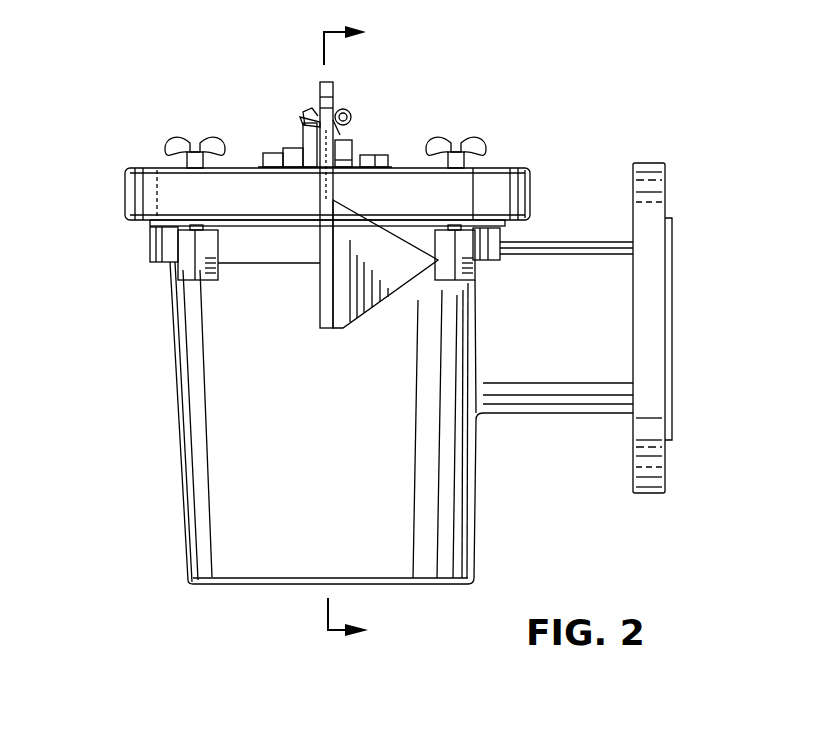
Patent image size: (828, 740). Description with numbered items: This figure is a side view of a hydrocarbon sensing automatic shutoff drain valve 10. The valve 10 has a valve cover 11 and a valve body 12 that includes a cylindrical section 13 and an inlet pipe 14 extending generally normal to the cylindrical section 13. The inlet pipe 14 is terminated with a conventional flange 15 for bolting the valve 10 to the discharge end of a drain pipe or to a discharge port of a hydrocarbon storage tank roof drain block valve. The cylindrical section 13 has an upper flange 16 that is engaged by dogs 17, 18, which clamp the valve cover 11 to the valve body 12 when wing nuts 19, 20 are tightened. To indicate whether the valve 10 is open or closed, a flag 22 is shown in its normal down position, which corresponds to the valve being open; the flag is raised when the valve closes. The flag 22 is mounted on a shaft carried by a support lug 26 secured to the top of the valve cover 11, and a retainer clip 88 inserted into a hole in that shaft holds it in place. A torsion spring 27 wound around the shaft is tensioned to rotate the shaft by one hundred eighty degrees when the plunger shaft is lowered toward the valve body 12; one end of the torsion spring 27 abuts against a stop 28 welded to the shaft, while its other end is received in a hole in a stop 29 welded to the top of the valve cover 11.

The hydrocarbon sensing automatic shutoff drain valve 10 is at (508, 76).
The valve cover 11 is at (508, 177).
The valve body 12 is at (168, 385).
The cylindrical section 13 is at (196, 510).
The inlet pipe 14 is at (542, 403).
The flange 15 is at (650, 168).
The upper flange 16 is at (130, 197).
The dog 17 is at (196, 280).
The dog 18 is at (472, 274).
The wing nut 19 is at (185, 147).
The wing nut 20 is at (478, 147).
The flag 22 is at (360, 303).
The support lug 26 is at (350, 130).
The torsion spring 27 is at (313, 132).
The stop 28 is at (321, 97).
The stop 29 is at (353, 147).
The retainer clip 88 is at (343, 110).